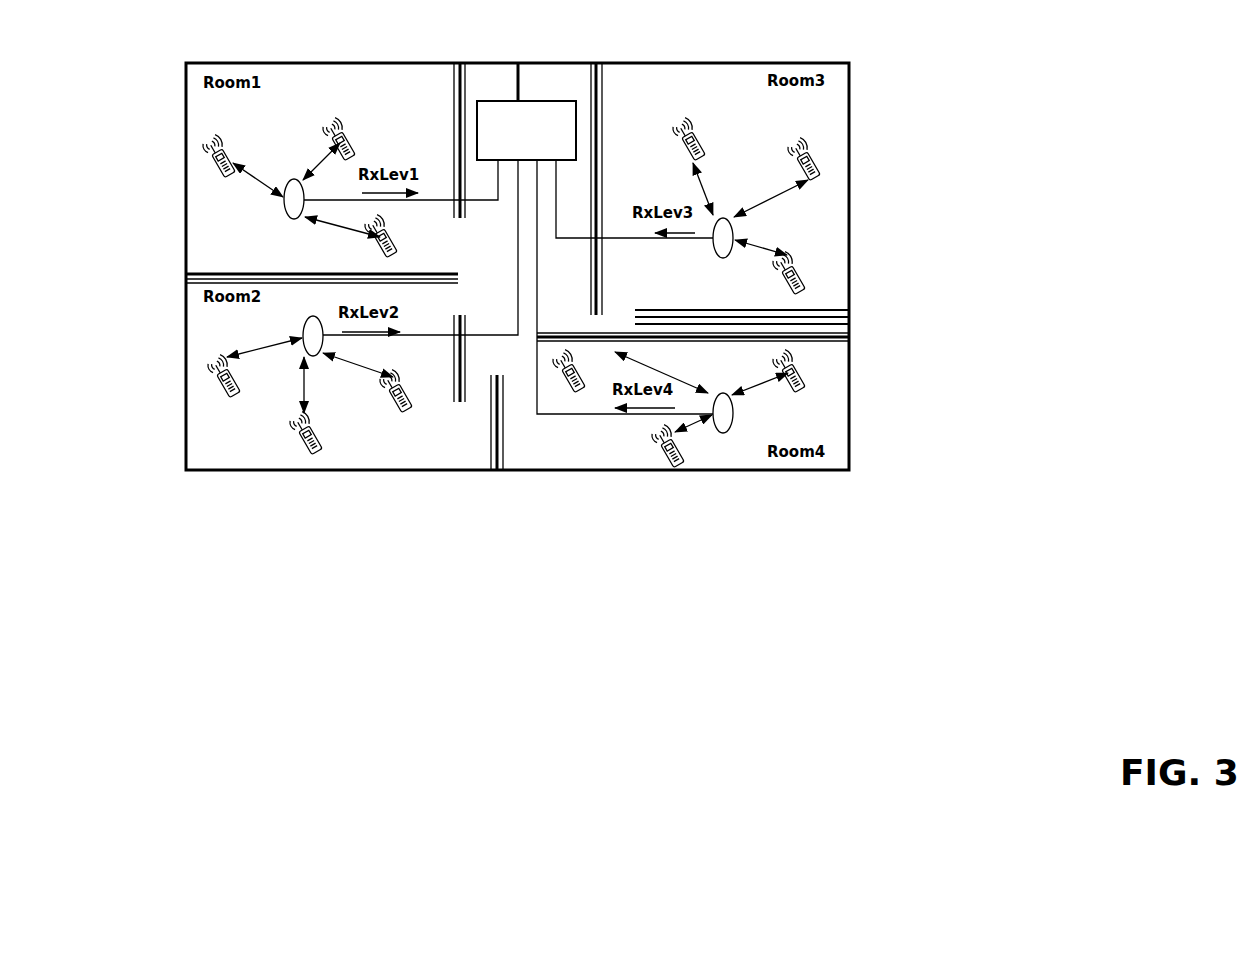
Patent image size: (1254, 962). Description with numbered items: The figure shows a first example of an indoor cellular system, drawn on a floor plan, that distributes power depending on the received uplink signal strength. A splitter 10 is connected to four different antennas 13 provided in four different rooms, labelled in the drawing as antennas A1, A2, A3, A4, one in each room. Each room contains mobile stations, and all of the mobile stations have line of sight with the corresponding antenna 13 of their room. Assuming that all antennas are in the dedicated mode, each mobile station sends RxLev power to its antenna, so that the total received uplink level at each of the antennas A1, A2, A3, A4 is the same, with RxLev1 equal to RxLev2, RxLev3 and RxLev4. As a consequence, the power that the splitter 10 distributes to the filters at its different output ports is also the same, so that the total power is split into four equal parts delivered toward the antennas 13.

The power splitter 10 is at (554, 101).
The antenna 13 is at (513, 290).
The access point A1 is at (293, 183).
The access point A2 is at (302, 330).
The access point A3 is at (731, 221).
The access point A4 is at (721, 398).